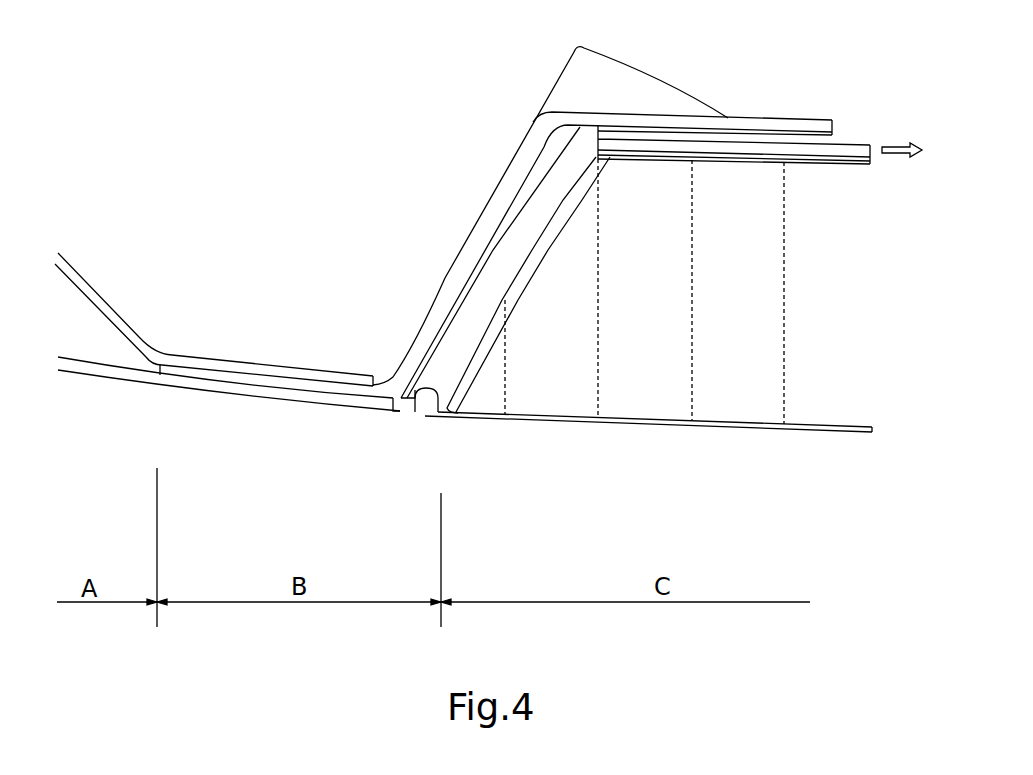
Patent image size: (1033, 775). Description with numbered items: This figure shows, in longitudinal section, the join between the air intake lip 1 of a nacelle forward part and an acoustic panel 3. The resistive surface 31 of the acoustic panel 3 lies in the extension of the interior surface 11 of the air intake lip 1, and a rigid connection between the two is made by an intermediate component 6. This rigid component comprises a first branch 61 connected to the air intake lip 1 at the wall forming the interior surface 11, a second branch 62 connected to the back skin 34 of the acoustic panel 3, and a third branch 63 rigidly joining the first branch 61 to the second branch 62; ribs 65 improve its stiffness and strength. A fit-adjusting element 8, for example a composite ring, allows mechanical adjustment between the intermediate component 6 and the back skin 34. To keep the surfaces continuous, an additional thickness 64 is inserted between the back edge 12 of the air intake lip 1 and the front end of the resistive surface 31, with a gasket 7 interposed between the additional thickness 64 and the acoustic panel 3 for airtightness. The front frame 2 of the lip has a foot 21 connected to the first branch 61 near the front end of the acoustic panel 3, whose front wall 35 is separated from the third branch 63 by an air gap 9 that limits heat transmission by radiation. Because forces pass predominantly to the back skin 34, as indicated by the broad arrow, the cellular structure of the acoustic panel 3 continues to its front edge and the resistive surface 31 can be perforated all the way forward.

The air intake lip 1 is at (229, 436).
The interior surface 11 is at (260, 395).
The back edge 12 is at (398, 411).
The front frame 2 is at (214, 313).
The foot 21 is at (270, 362).
The acoustic panel 3 is at (654, 273).
The resistive surface 31 is at (653, 423).
The back skin 34 is at (855, 140).
The front wall 35 is at (522, 285).
The intermediate component 6 is at (496, 251).
The first branch 61 is at (212, 373).
The second branch 62 is at (672, 113).
The third branch 63 is at (450, 300).
The additional thickness 64 is at (406, 414).
The ribs 65 is at (573, 90).
The gasket 7 is at (428, 416).
The fit-adjusting element 8 is at (805, 128).
The air gap 9 is at (533, 213).